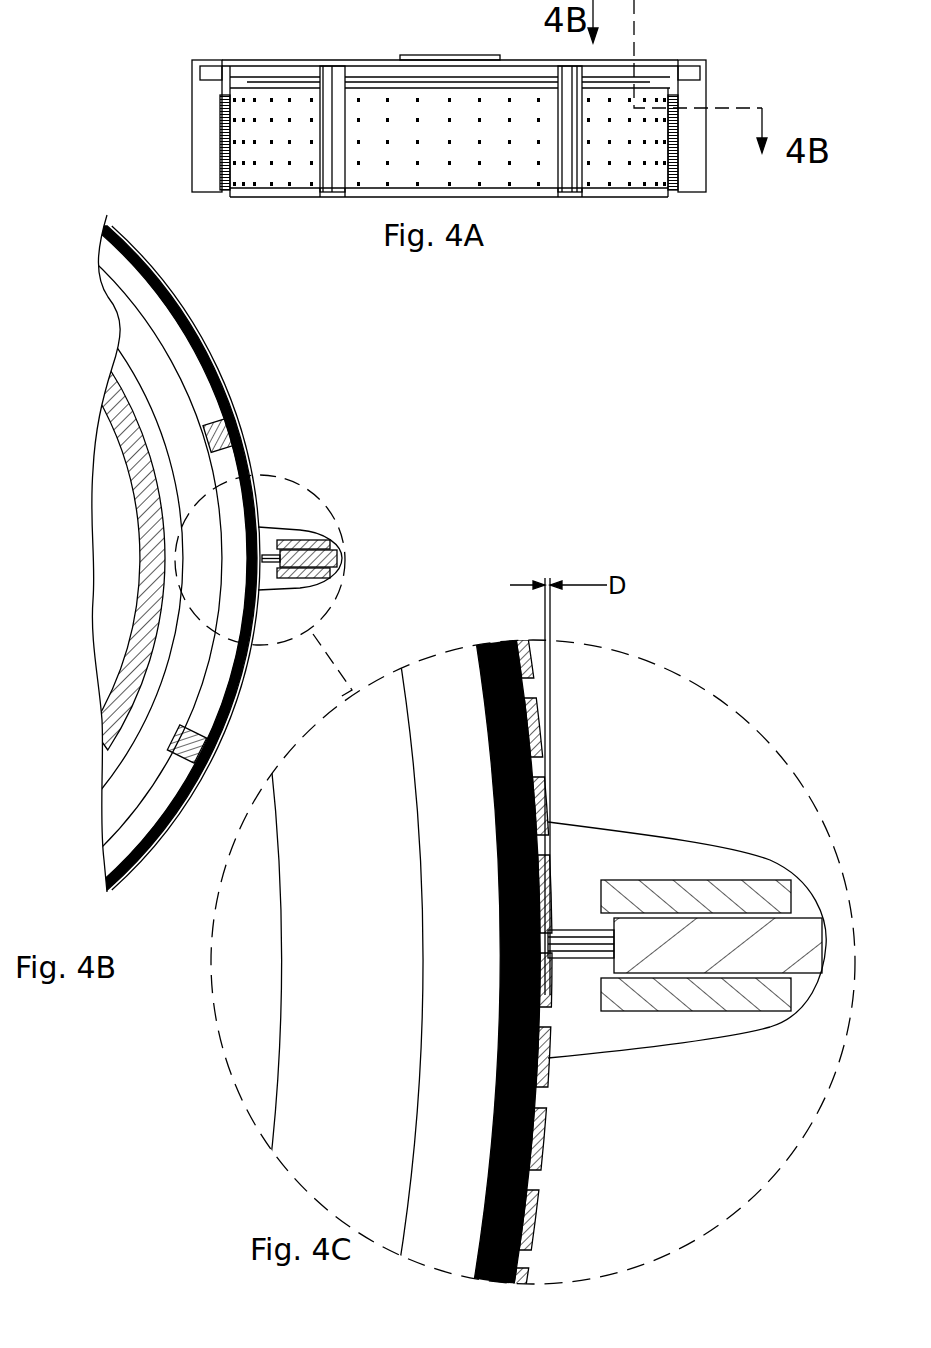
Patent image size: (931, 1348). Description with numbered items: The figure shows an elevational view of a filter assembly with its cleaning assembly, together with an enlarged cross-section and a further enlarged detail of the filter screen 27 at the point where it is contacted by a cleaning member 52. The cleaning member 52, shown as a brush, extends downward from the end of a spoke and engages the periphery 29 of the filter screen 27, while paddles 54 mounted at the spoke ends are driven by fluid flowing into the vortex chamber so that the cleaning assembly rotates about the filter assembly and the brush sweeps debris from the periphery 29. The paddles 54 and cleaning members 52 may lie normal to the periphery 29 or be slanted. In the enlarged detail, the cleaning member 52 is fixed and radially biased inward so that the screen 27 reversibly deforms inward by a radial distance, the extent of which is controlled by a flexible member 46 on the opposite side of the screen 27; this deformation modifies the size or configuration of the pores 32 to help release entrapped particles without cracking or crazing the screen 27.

In FIG. 4A, the filter screen 27 is at (600, 182).
In FIG. 4B, the filter screen 27 is at (233, 400).
In FIG. 4C, the filter screen 27 is at (528, 1230).
In FIG. 4C, the periphery 29 is at (548, 918).
In FIG. 4C, the pores 32 is at (547, 1095).
In FIG. 4C, the flexible member 46 is at (490, 703).
In FIG. 4A, the cleaning member 52 is at (221, 167).
In FIG. 4C, the cleaning member 52 is at (580, 958).
In FIG. 4A, the paddles 54 is at (192, 92).
In FIG. 4C, the paddles 54 is at (668, 1011).